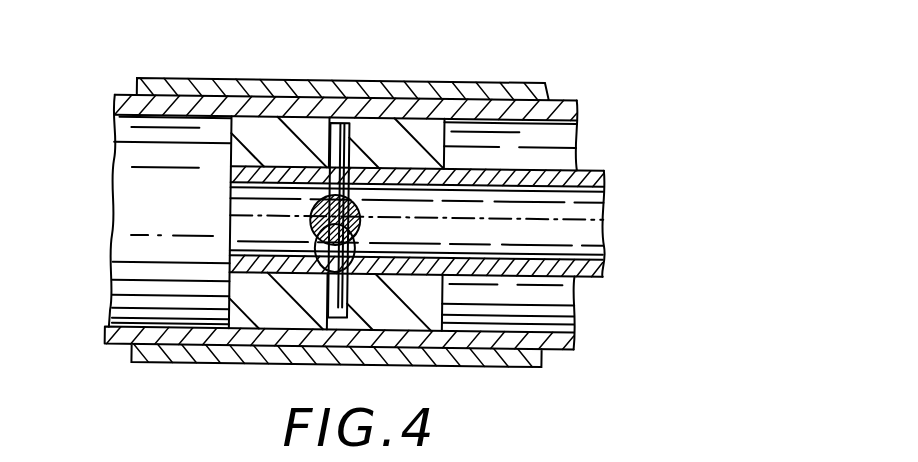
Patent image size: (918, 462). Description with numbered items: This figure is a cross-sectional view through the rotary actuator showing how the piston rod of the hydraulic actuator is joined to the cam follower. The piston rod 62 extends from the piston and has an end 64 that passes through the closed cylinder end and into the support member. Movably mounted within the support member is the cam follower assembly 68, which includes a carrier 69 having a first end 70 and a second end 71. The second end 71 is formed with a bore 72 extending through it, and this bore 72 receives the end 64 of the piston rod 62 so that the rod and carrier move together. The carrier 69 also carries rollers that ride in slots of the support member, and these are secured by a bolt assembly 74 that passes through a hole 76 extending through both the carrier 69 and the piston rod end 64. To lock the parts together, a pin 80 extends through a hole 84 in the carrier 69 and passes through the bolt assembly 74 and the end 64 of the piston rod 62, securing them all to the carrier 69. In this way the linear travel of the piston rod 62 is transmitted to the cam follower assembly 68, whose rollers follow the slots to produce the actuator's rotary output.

The piston rod 62 is at (579, 281).
The end 64 is at (228, 215).
The cam follower assembly 68 is at (202, 160).
The carrier 69 is at (253, 117).
The first end 70 is at (469, 119).
The second end 71 is at (232, 292).
The bore 72 is at (264, 273).
The bolt assembly 74 is at (352, 206).
The hole 76 is at (352, 277).
The pin 80 is at (342, 123).
The hole 84 is at (332, 138).